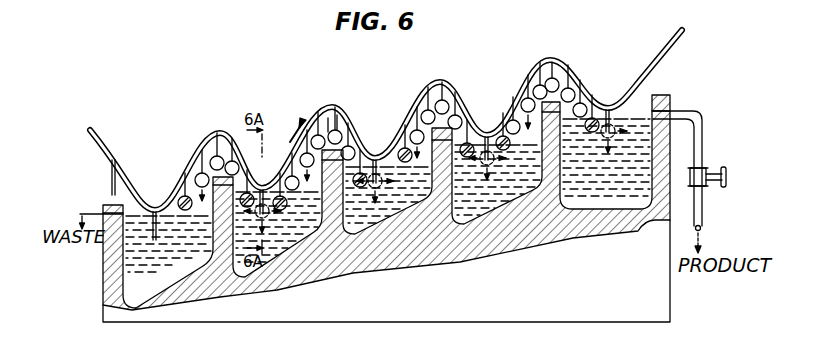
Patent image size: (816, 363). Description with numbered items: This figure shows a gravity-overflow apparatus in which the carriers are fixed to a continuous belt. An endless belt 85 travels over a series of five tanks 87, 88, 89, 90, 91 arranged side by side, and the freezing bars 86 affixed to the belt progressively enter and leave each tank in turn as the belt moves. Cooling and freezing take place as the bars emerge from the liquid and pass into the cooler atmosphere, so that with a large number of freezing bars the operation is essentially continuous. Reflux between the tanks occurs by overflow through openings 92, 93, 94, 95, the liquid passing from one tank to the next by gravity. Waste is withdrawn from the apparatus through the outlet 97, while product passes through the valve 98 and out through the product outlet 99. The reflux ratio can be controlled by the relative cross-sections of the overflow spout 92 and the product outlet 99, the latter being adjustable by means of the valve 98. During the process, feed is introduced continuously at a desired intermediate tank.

The endless belt 85 is at (100, 140).
The freezing bar 86 is at (110, 182).
The tank 87 is at (143, 281).
The tank 88 is at (273, 246).
The tank 89 is at (375, 228).
The tank 90 is at (485, 202).
The tank 91 is at (602, 192).
The overflow spout 92 is at (578, 103).
The overflow opening 93 is at (465, 132).
The overflow opening 94 is at (352, 150).
The overflow opening 95 is at (243, 178).
The waste outlet 97 is at (97, 214).
The valve 98 is at (708, 173).
The product outlet 99 is at (693, 112).